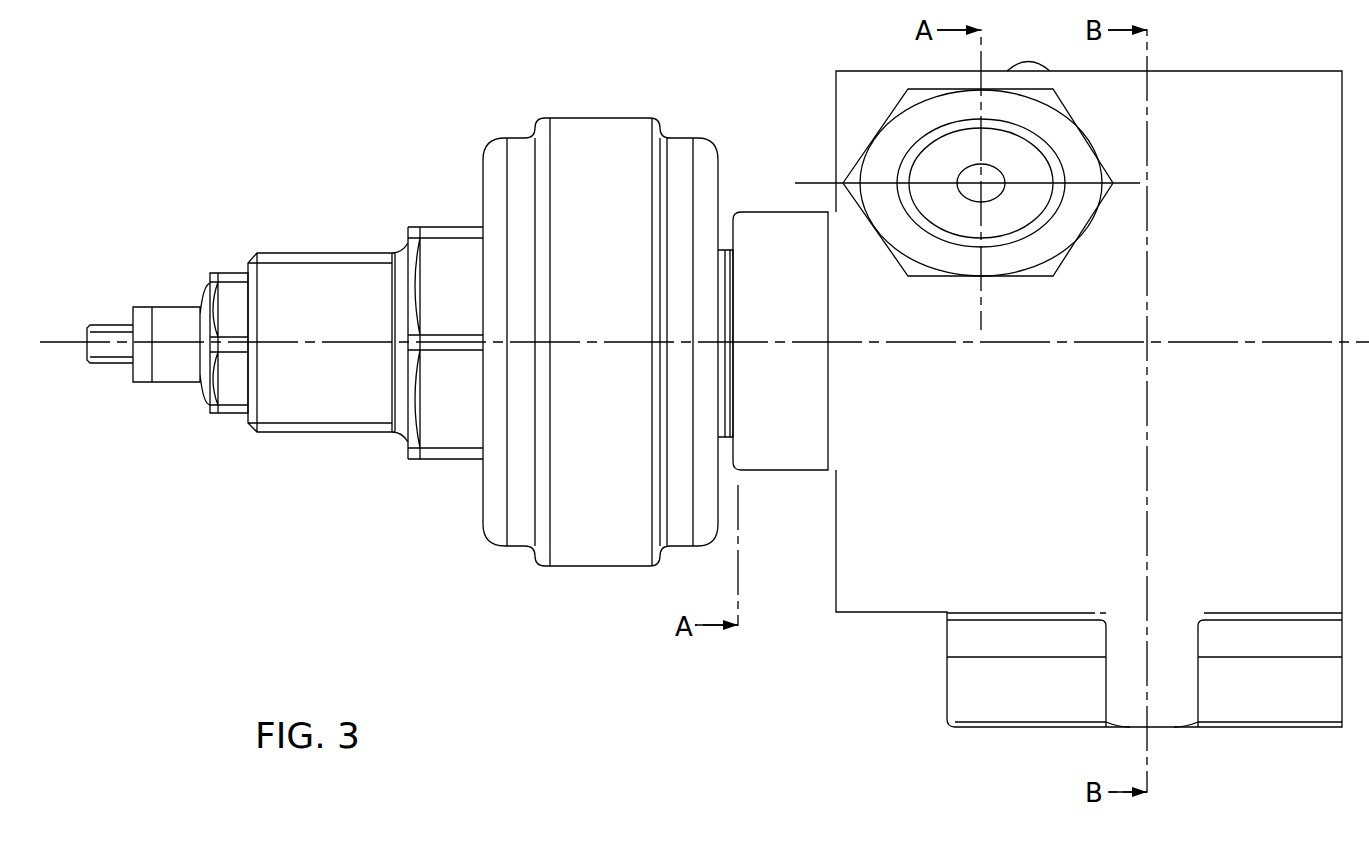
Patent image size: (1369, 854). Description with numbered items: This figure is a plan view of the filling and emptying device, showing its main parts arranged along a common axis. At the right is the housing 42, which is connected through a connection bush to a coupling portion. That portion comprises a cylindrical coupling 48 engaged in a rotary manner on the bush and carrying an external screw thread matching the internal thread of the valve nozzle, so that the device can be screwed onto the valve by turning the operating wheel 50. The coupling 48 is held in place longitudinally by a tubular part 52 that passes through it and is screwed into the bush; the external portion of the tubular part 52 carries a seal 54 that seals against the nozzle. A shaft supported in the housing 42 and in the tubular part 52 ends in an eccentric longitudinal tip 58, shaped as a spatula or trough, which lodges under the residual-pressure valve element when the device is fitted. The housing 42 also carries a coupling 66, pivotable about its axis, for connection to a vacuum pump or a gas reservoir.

The housing 42 is at (847, 585).
The cylindrical coupling 48 is at (432, 437).
The operating wheel 50 is at (605, 117).
The tubular part 52 is at (222, 395).
The seal 54 is at (147, 305).
The longitudinal tip 58 is at (102, 325).
The coupling 66 is at (1067, 112).